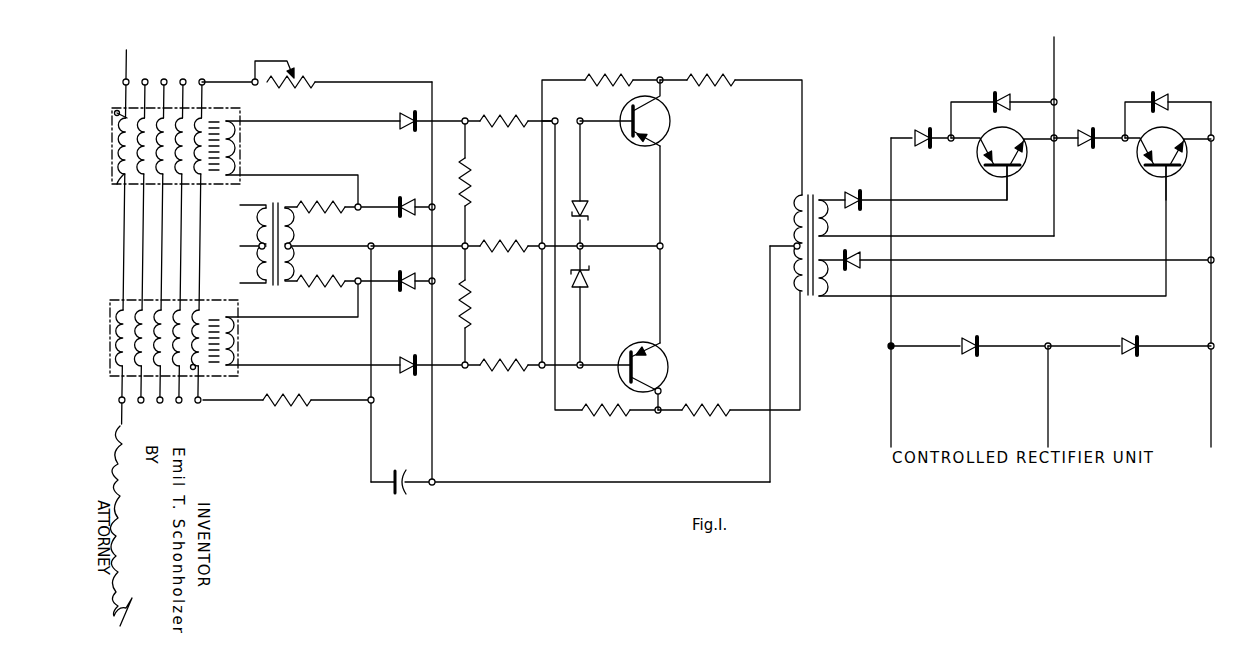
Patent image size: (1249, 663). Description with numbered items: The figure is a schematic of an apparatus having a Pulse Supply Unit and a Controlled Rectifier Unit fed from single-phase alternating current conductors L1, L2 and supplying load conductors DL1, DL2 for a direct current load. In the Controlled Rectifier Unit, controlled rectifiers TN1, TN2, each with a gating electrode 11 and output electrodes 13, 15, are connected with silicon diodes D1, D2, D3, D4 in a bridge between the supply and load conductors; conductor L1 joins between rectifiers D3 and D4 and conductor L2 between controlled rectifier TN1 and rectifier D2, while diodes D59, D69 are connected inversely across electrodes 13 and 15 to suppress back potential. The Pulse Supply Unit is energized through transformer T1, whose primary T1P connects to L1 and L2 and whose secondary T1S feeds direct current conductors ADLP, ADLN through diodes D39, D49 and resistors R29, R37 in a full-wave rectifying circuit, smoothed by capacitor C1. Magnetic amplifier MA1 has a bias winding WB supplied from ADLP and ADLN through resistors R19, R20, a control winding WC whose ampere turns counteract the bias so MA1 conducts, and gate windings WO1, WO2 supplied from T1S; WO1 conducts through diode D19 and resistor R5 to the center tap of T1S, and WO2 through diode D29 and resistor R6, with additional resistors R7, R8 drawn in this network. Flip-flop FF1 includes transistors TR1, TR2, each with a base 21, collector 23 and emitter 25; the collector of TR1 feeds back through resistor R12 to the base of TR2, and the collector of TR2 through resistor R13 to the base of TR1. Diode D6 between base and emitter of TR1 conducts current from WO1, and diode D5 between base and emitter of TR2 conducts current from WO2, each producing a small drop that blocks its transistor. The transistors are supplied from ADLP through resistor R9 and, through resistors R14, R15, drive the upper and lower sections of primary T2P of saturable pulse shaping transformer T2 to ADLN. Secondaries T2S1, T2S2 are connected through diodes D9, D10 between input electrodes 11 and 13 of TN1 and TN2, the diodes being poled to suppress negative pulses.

The magnetic amplifier MA1 is at (184, 69).
The control winding WC is at (118, 184).
The bias winding WB is at (207, 184).
The gate winding WO1 is at (238, 155).
The gate winding WO2 is at (236, 333).
The transformer T1 is at (282, 200).
The primary of transformer T1 T1P is at (262, 260).
The secondary of transformer T1 T1S is at (290, 226).
The supply conductor L1 is at (240, 282).
The supply conductor L2 is at (240, 208).
The resistor R19 is at (292, 92).
The resistor R37 is at (316, 201).
The resistor R29 is at (335, 274).
The resistor R20 is at (280, 395).
The diode D19 is at (412, 103).
The diode D39 is at (412, 184).
The diode D49 is at (407, 261).
The diode D29 is at (408, 377).
The resistor R5 is at (470, 179).
The resistor R6 is at (472, 302).
The resistor R7 is at (505, 114).
The resistor R8 is at (500, 376).
The resistor R9 is at (512, 238).
The smoothing capacitor C1 is at (398, 467).
The direct current conductor ADLP is at (371, 430).
The direct current conductor ADLN is at (432, 430).
The flip-flop FF1 is at (727, 297).
The transistor TR1 is at (670, 122).
The transistor TR2 is at (668, 362).
The base 21 is at (625, 113).
The collector 23 is at (640, 103).
The emitter 25 is at (645, 142).
The diode D5 is at (588, 276).
The diode D6 is at (588, 208).
The resistor R12 is at (619, 75).
The resistor R13 is at (593, 400).
The resistor R14 is at (713, 75).
The resistor R15 is at (712, 400).
The pulse shaping transformer T2 is at (827, 190).
The primary of pulse shaping transformer T2P is at (797, 220).
The secondary of pulse shaping transformer T2S1 is at (822, 220).
The secondary of pulse shaping transformer T2S2 is at (822, 278).
The diode D9 is at (849, 198).
The diode D10 is at (848, 258).
The diode D1 is at (918, 130).
The diode D2 is at (1090, 128).
The diode D59 is at (1015, 94).
The diode D69 is at (1158, 94).
The controlled rectifier TN1 is at (990, 128).
The controlled rectifier TN2 is at (1158, 128).
The gating electrode 11 is at (1015, 170).
The output electrode 13 is at (1025, 155).
The output electrode 15 is at (975, 155).
The diode D3 is at (967, 337).
The diode D4 is at (1123, 337).
The load conductor DL1 is at (1211, 400).
The load conductor DL2 is at (900, 400).